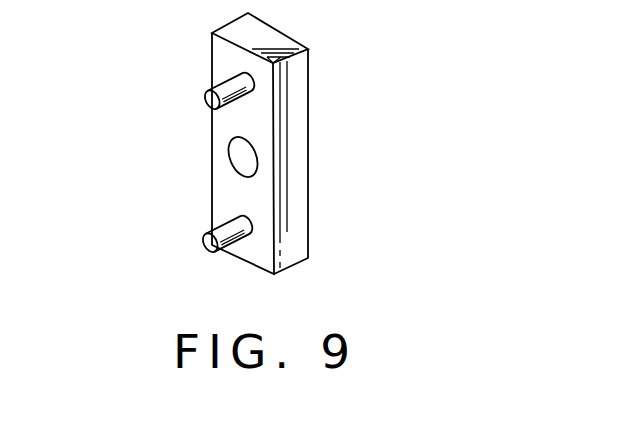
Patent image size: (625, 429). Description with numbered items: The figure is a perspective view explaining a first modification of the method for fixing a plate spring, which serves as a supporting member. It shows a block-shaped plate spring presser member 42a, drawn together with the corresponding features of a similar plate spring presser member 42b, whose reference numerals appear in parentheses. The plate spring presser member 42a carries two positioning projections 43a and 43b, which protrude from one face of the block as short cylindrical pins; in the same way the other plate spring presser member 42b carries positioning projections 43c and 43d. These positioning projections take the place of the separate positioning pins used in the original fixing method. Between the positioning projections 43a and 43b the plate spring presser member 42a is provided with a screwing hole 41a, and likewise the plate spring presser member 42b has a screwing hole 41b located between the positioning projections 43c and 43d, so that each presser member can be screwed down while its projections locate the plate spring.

The plate spring presser member 42a is at (300, 157).
The plate spring presser member 42b is at (192, 162).
The screwing hole 41a is at (230, 163).
The screwing hole 41b is at (173, 176).
The positioning projection 43a is at (206, 100).
The positioning projection 43b is at (203, 245).
The positioning projection 43c is at (167, 104).
The positioning projection 43d is at (166, 262).